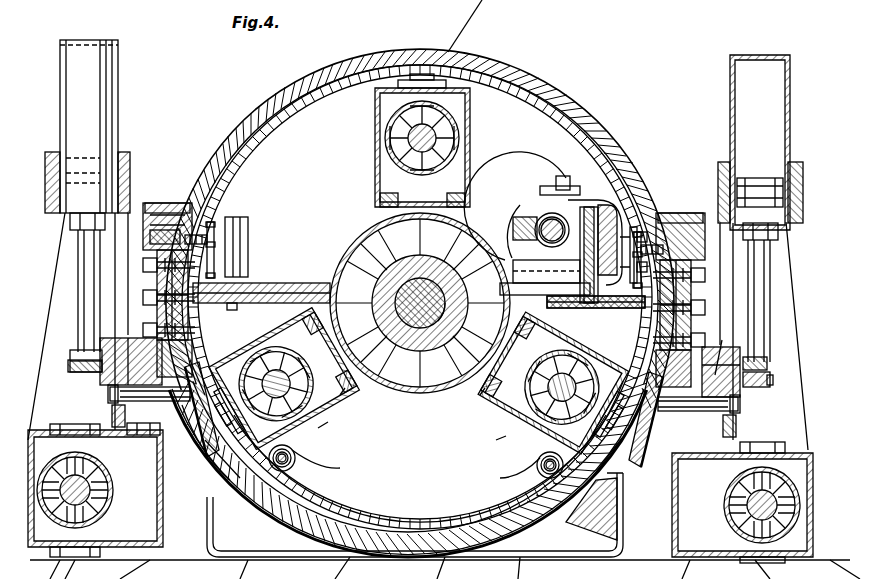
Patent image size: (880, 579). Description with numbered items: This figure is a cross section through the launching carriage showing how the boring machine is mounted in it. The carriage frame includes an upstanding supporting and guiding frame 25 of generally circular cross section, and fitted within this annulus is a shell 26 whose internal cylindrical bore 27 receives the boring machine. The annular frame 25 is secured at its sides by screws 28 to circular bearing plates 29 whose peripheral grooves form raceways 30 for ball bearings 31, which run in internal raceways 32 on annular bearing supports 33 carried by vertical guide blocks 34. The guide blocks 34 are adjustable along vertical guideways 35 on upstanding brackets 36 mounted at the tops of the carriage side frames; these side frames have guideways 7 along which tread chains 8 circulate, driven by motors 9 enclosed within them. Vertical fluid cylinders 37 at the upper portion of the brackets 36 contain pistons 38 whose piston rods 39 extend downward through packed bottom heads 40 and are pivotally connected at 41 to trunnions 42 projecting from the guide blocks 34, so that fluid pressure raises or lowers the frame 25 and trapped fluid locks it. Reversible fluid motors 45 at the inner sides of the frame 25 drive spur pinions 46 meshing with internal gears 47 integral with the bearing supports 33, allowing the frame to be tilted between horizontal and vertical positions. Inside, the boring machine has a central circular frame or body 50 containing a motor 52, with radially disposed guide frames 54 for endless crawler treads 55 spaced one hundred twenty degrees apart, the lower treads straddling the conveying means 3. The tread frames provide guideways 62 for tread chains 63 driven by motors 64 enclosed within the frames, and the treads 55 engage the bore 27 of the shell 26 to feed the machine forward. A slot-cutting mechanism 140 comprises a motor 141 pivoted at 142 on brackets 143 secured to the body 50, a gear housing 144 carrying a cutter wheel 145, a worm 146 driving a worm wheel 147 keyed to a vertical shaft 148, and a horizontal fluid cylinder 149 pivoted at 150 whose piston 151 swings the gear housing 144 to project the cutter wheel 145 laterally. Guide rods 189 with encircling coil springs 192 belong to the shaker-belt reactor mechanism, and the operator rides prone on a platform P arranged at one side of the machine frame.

The conveying means 3 is at (402, 508).
The guideways 7 is at (48, 432).
The tread chains 8 is at (80, 426).
The motors 9 is at (96, 492).
The supporting and guiding frame 25 is at (600, 200).
The shell 26 is at (533, 102).
The internal cylindrical bore 27 is at (268, 118).
The screws 28 is at (138, 334).
The bearing plates 29 is at (212, 318).
The raceways 30 is at (200, 412).
The ball bearings 31 is at (162, 205).
The internal raceways 32 is at (195, 430).
The annular bearing supports 33 is at (178, 238).
The vertical guide blocks 34 is at (130, 368).
The vertical guideways 35 is at (124, 232).
The upstanding frames or brackets 36 is at (128, 158).
The vertical fluid cylinders 37 is at (112, 48).
The pistons 38 is at (45, 160).
The piston rods 39 is at (70, 292).
The packed bottom heads 40 is at (70, 226).
The pivotal connection 41 is at (75, 356).
The trunnions 42 is at (75, 366).
The reversible fluid motors 45 is at (238, 220).
The spur pinions 46 is at (190, 204).
The internal gears 47 is at (195, 365).
The central circular frame or body 50 is at (360, 280).
The motor 52 is at (385, 265).
The guide frames 54 is at (470, 125).
The endless crawler treads 55 is at (215, 450).
The guideways 62 is at (378, 100).
The tread chains 63 is at (350, 393).
The motors 64 is at (322, 426).
The slot-cutting mechanism 140 is at (586, 207).
The motor 141 is at (543, 216).
The pivot 142 is at (560, 176).
The brackets 143 is at (508, 190).
The gear housing 144 is at (606, 240).
The cutter wheel 145 is at (620, 308).
The worm 146 is at (513, 228).
The worm wheel 147 is at (634, 258).
The vertical shaft 148 is at (642, 262).
The horizontal fluid cylinder 149 is at (484, 262).
The pivotal mounting 150 is at (500, 290).
The piston 151 is at (502, 305).
The guide rods 189 is at (298, 468).
The coil springs 192 is at (322, 466).
The platform P is at (250, 272).